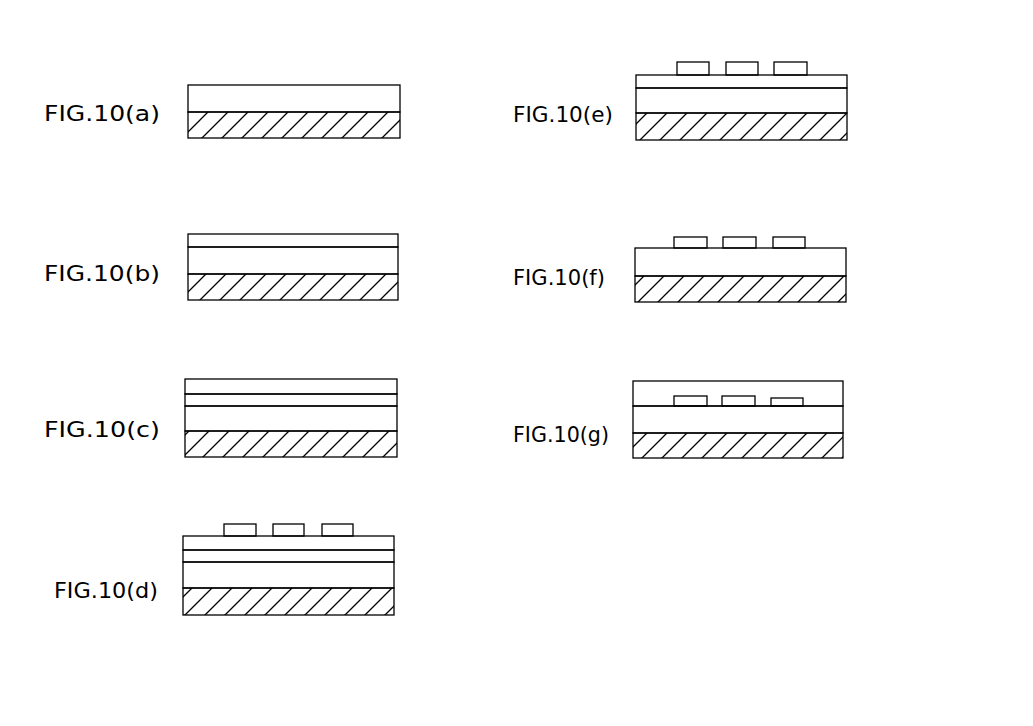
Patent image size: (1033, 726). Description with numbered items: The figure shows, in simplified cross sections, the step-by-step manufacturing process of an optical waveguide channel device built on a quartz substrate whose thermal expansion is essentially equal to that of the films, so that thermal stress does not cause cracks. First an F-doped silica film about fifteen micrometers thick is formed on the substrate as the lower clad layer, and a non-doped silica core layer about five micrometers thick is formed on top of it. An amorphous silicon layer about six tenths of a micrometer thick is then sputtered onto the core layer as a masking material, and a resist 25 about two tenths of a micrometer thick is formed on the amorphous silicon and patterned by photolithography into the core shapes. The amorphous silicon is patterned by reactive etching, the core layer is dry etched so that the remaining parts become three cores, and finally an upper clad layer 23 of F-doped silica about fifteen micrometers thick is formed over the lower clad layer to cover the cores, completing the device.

The upper clad layer 23 is at (843, 397).
The resist 25 is at (355, 528).